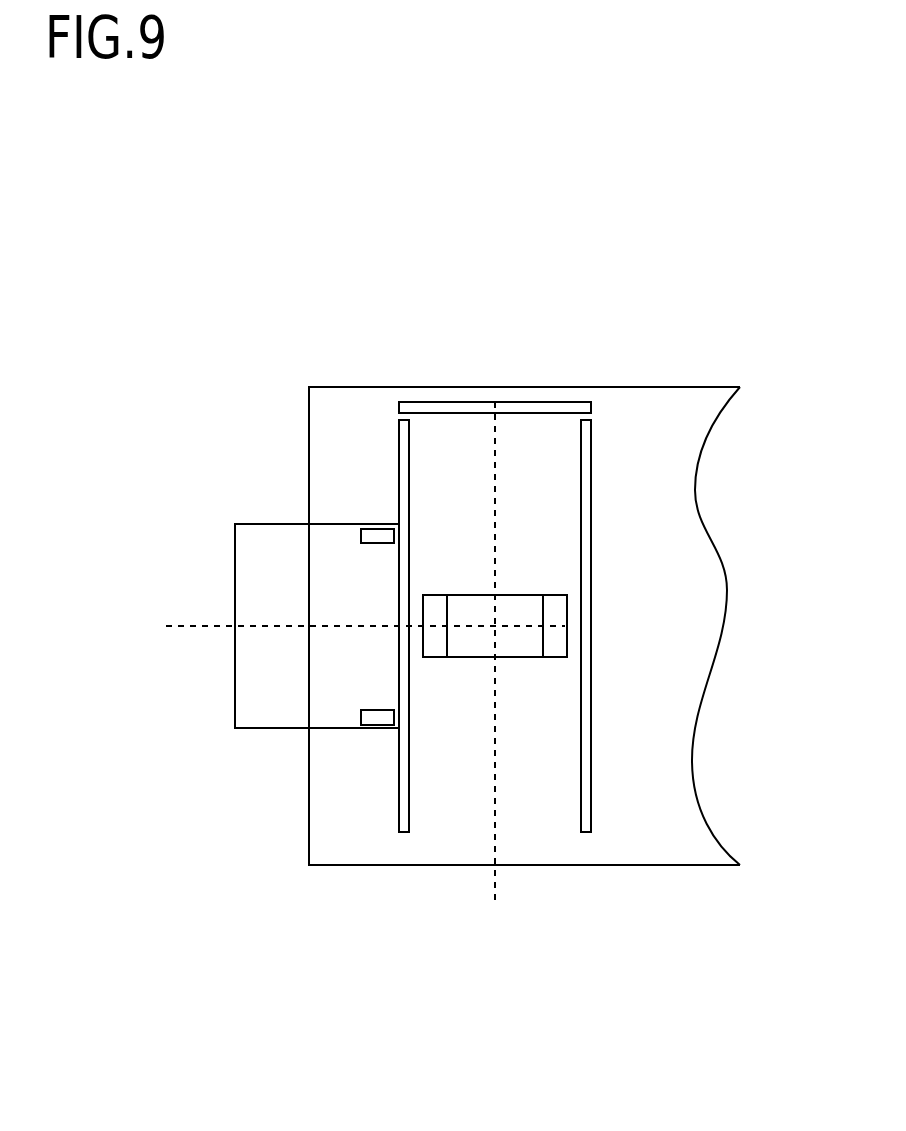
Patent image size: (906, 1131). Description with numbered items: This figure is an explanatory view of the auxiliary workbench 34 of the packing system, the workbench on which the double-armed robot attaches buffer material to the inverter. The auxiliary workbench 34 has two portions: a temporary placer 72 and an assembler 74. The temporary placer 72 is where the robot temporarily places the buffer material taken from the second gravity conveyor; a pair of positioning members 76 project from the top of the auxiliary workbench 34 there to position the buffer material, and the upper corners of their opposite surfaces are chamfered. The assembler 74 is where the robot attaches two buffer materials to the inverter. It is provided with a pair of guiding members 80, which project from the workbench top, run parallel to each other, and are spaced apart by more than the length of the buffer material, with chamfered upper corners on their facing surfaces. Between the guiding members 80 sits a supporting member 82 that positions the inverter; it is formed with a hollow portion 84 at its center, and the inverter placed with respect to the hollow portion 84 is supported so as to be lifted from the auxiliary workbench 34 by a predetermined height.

The auxiliary workbench 34 is at (259, 238).
The temporary placer 72 is at (242, 695).
The assembler 74 is at (487, 824).
The positioning members 76 is at (374, 535).
The guiding members 80 is at (402, 447).
The supporting member 82 is at (557, 616).
The hollow portion 84 is at (517, 642).